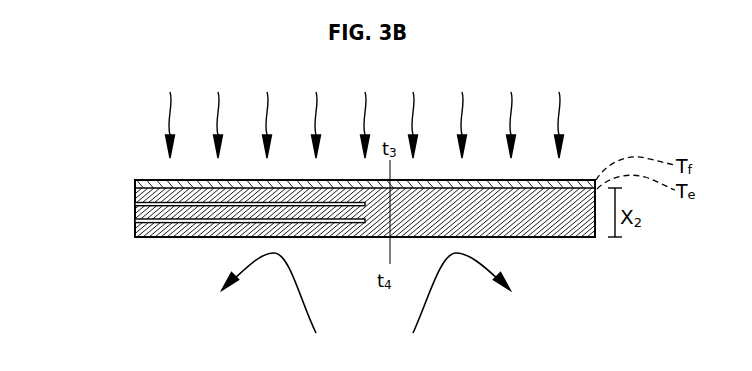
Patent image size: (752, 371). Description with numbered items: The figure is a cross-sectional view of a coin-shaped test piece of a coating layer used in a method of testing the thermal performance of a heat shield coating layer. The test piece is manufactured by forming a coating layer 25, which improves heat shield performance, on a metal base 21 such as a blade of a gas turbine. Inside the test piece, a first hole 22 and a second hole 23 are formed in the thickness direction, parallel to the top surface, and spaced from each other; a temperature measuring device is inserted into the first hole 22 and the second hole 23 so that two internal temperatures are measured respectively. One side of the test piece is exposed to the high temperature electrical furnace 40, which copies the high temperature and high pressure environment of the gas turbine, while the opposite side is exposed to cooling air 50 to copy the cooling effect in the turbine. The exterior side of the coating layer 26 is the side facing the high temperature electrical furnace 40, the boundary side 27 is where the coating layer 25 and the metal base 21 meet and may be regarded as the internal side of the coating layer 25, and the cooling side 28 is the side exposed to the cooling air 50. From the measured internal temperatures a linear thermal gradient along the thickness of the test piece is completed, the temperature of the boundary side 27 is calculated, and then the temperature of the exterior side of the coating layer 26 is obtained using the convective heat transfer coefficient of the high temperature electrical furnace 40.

The metal base 21 is at (541, 217).
The first hole 22 is at (135, 204).
The second hole 23 is at (135, 221).
The coating layer 25 is at (490, 180).
The exterior side of the coating layer 26 is at (566, 180).
The boundary side 27 is at (540, 180).
The cooling side 28 is at (566, 237).
The high temperature electrical furnace 40 is at (170, 118).
The cooling air 50 is at (305, 292).